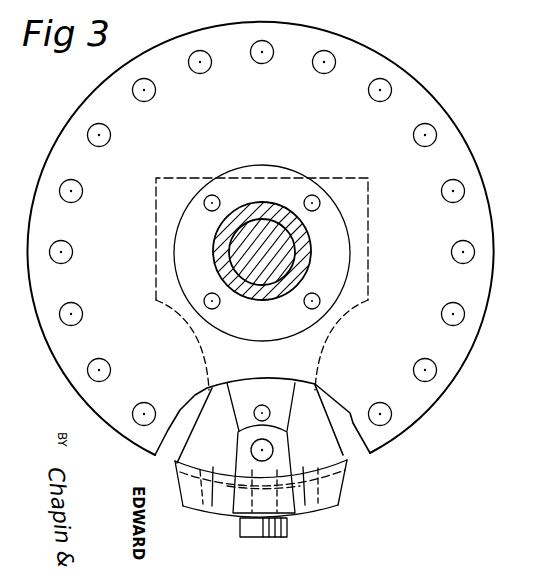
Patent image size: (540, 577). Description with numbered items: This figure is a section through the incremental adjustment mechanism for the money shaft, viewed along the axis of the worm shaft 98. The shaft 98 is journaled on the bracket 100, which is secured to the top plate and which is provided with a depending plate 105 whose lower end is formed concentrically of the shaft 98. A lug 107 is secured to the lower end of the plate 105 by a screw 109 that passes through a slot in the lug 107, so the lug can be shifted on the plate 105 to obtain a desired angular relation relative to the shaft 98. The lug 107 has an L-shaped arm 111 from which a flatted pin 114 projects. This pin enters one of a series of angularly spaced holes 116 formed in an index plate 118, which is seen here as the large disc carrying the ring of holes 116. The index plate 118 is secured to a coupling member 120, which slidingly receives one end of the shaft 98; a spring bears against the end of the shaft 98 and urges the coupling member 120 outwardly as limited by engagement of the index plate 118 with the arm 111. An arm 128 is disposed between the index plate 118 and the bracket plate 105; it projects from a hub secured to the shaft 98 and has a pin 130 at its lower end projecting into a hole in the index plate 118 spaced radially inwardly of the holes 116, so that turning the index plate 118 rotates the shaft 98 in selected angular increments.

The shaft 98 is at (214, 249).
The bracket 100 is at (158, 176).
The depending plate 105 is at (366, 454).
The lug 107 is at (340, 507).
The screw 109 is at (267, 537).
The L-shaped arm 111 is at (297, 503).
The flatted pin 114 is at (251, 446).
The angularly spaced holes 116 is at (448, 322).
The index plate 118 is at (413, 428).
The coupling member 120 is at (310, 258).
The arm 128 is at (288, 417).
The pin 130 is at (256, 404).